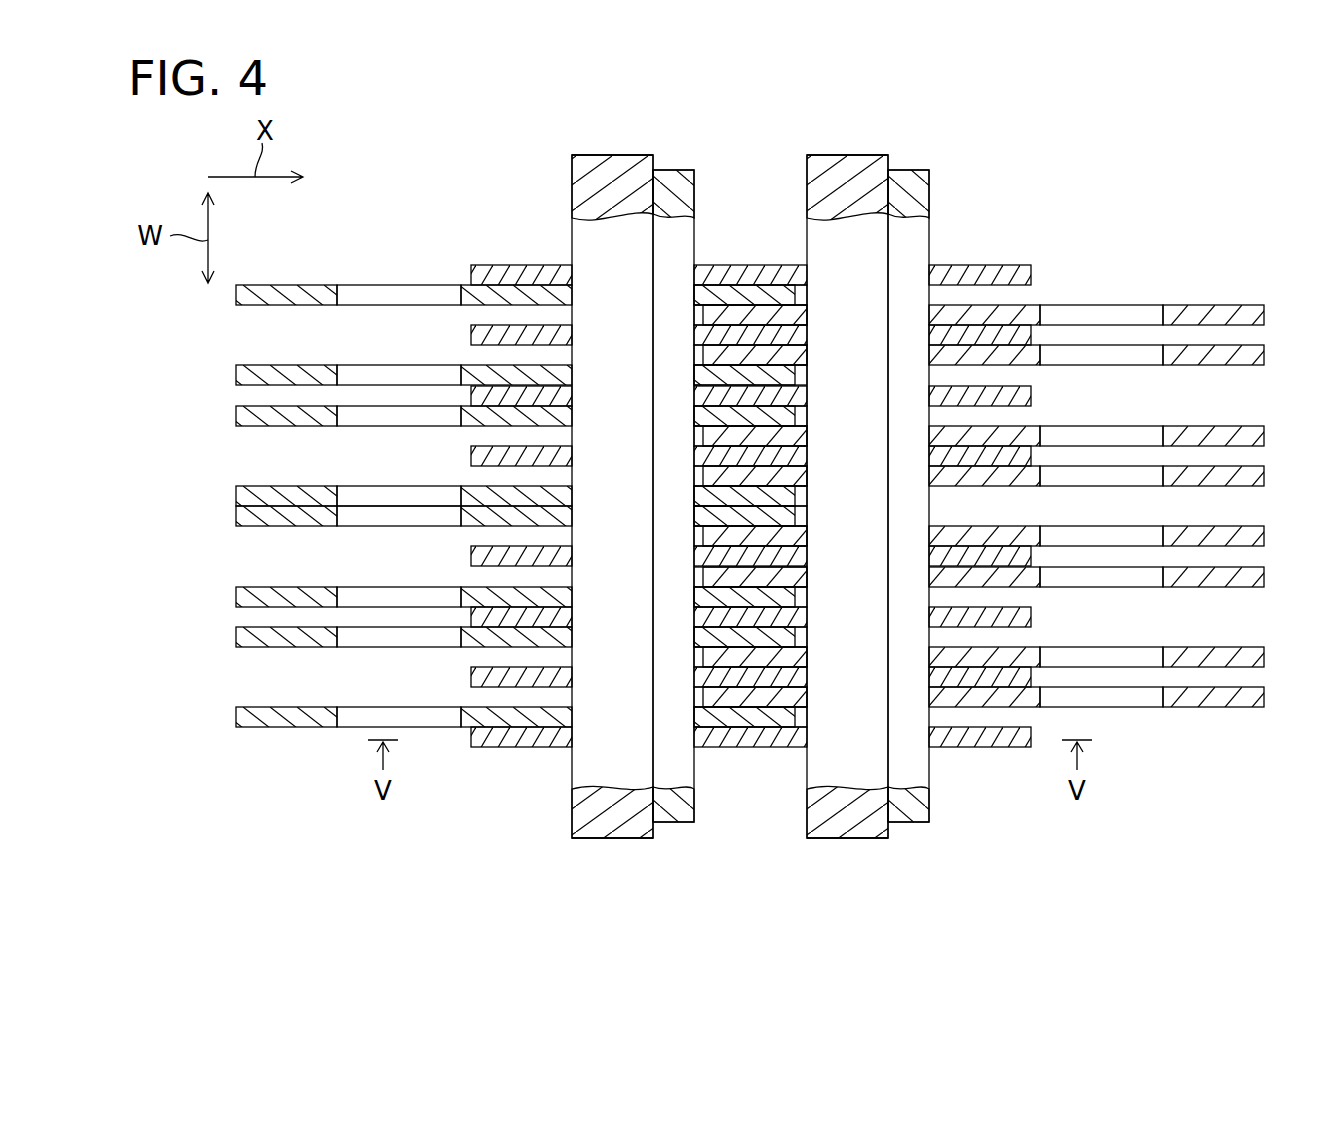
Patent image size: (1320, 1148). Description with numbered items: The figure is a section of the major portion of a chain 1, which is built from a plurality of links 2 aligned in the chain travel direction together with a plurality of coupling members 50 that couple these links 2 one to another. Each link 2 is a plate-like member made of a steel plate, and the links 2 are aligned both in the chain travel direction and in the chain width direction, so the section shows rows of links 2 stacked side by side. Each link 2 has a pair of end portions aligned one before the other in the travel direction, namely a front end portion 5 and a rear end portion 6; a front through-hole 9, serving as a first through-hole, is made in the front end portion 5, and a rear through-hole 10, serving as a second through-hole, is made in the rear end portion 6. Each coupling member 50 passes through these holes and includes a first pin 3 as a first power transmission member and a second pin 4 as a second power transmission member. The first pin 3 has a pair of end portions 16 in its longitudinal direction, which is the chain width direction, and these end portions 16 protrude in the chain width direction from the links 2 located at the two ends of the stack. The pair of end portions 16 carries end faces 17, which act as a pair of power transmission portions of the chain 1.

The chain 1 is at (1113, 196).
The link 2 is at (236, 717).
The first pin 3 is at (631, 838).
The second pin 4 is at (673, 812).
The front end portion 5 is at (753, 732).
The rear end portion 6 is at (280, 647).
The front through-hole 9 is at (573, 595).
The rear through-hole 10 is at (573, 616).
The end portions 16 is at (572, 192).
The end faces 17 is at (612, 155).
The coupling member 50 is at (713, 516).